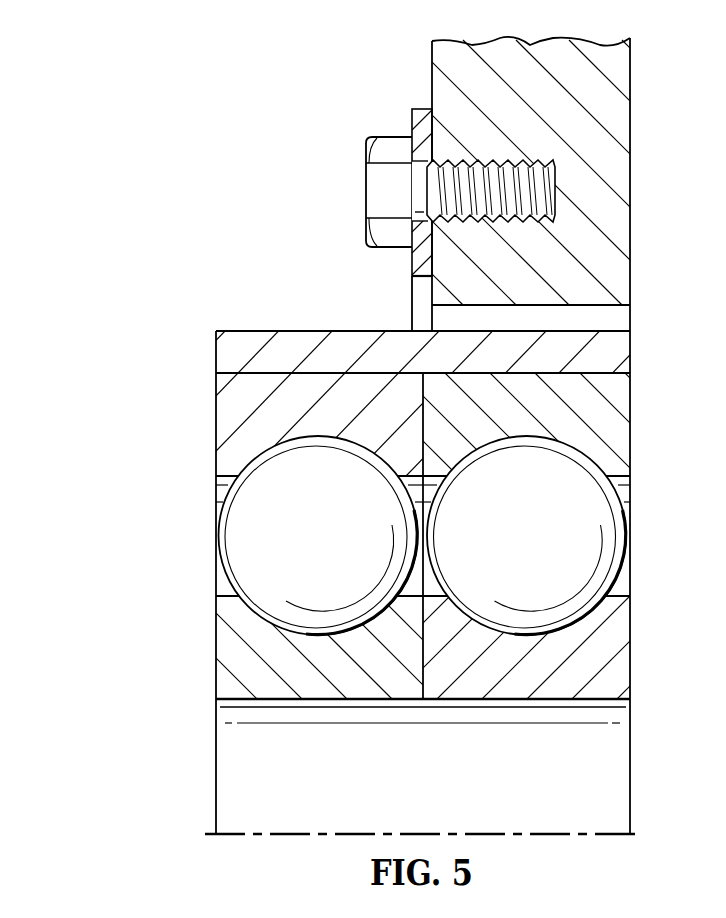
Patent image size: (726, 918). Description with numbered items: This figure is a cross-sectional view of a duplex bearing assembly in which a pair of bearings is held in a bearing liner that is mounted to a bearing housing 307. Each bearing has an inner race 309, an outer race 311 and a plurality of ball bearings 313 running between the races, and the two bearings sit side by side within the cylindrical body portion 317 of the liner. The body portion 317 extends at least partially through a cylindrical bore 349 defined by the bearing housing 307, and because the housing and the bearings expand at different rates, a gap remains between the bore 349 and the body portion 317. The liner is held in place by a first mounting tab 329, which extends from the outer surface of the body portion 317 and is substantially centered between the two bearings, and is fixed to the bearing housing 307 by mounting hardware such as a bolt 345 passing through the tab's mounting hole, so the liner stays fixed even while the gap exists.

The bearing housing 307 is at (438, 88).
The first mounting tab 329 is at (418, 125).
The bolt 345 is at (365, 192).
The cylindrical bore 349 is at (624, 318).
The cylindrical body portion 317 is at (220, 351).
The outer race 311 is at (220, 419).
The ball bearings 313 is at (340, 552).
The inner race 309 is at (222, 641).